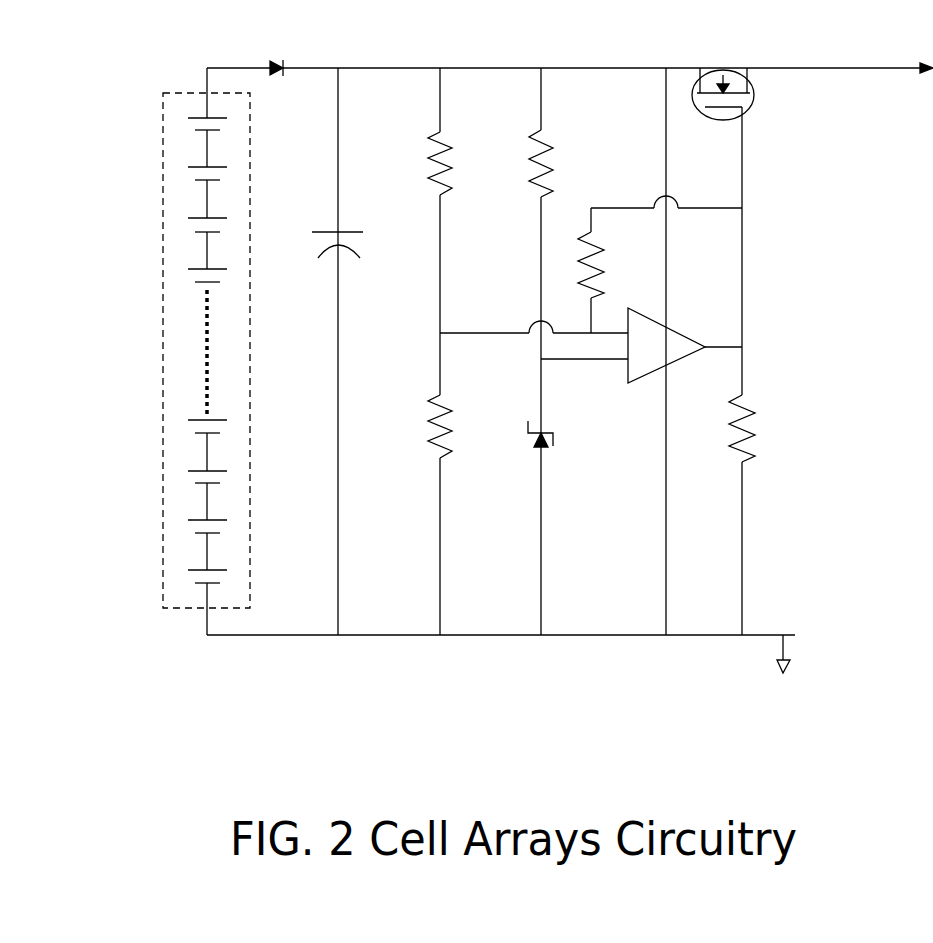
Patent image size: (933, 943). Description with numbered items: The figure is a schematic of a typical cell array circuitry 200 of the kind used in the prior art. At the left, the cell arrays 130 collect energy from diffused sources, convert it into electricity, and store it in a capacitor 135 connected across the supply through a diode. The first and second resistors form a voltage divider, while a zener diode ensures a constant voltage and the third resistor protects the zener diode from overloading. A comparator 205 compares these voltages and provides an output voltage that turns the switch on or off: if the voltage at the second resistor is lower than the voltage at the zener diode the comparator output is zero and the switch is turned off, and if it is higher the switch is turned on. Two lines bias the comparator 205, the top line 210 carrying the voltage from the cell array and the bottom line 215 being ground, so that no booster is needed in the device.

The cell arrays 130 is at (163, 277).
The capacitor 135 is at (347, 272).
The cell array circuitry 200 is at (481, 378).
The comparator 205 is at (675, 342).
The top line 210 is at (666, 267).
The bottom line 215 is at (664, 502).